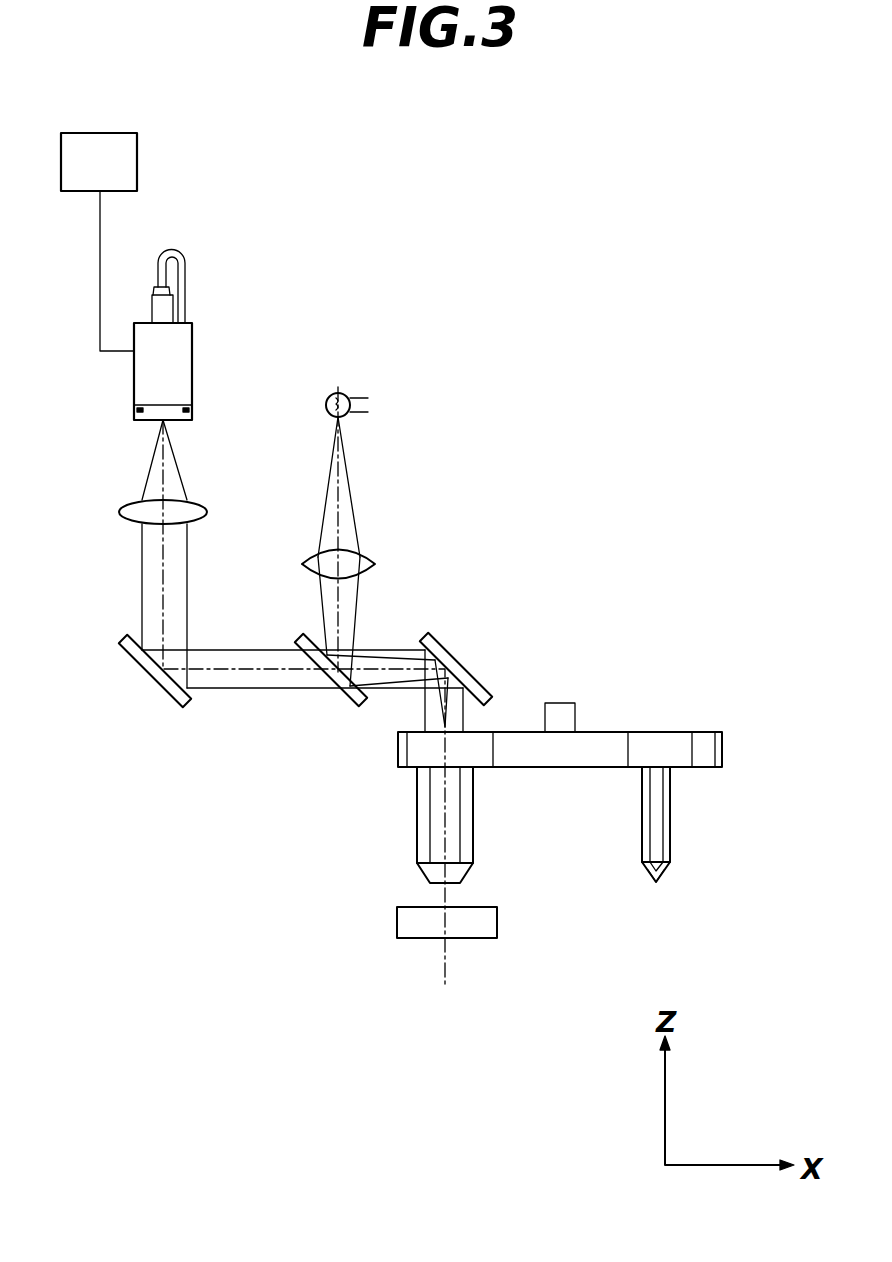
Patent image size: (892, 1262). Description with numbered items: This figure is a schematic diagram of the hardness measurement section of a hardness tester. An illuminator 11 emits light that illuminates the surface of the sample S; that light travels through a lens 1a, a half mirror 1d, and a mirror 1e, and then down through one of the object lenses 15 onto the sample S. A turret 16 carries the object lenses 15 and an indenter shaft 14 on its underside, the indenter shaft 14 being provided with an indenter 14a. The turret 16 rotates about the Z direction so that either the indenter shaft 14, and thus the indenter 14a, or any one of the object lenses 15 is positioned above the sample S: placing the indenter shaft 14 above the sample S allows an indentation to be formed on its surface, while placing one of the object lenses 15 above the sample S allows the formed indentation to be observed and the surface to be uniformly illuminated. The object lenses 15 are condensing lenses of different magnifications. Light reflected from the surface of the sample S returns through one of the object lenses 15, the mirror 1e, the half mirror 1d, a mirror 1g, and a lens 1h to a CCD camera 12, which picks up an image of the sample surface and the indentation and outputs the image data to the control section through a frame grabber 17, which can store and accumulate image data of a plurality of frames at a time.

The frame grabber 17 is at (137, 160).
The CCD camera 12 is at (192, 345).
The lens 1h is at (131, 508).
The mirror 1g is at (125, 640).
The illuminator 11 is at (350, 393).
The lens 1a is at (306, 558).
The half mirror 1d is at (358, 700).
The mirror 1e is at (450, 646).
The turret 16 is at (662, 732).
The object lenses 15 is at (475, 820).
The indenter shaft 14 is at (673, 820).
The indenter 14a is at (666, 872).
The sample S is at (500, 920).